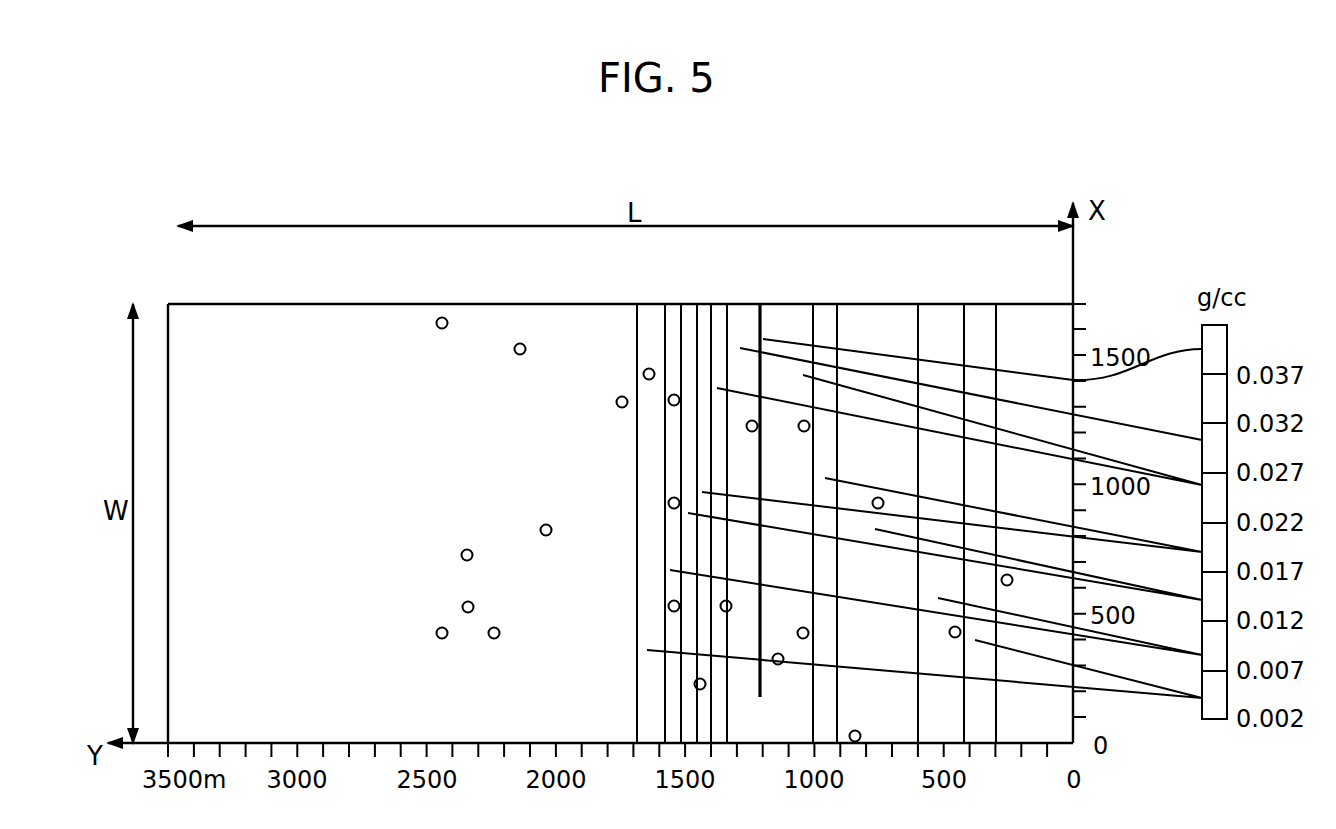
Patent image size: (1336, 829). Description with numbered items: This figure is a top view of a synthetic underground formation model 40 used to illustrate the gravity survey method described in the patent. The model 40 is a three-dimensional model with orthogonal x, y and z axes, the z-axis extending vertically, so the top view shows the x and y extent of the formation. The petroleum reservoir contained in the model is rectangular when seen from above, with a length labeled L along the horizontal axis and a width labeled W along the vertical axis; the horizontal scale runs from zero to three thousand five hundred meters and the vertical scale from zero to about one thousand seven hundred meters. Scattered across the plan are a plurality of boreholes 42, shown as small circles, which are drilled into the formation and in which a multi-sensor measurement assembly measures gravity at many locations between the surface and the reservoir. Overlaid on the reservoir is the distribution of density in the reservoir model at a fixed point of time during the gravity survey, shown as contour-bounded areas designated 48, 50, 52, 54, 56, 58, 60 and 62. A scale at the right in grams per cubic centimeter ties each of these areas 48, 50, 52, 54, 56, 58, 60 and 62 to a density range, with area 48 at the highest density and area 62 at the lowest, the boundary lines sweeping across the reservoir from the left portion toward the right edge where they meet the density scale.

The synthetic underground formation model 40 is at (188, 151).
The boreholes 42 is at (463, 548).
The density area 48 is at (762, 332).
The density area 50 is at (760, 680).
The density area 52 is at (742, 320).
The density area 54 is at (717, 328).
The density area 56 is at (672, 320).
The density area 58 is at (823, 332).
The density area 60 is at (948, 337).
The density area 62 is at (648, 676).